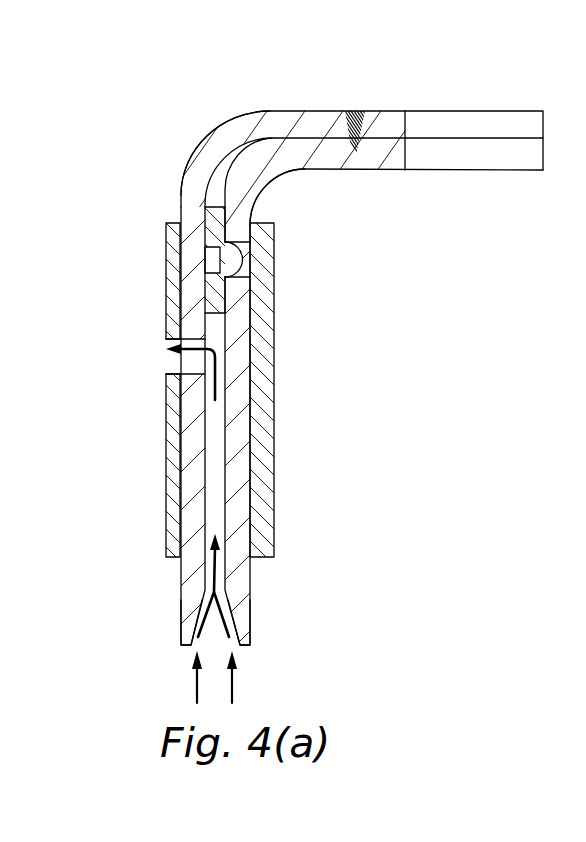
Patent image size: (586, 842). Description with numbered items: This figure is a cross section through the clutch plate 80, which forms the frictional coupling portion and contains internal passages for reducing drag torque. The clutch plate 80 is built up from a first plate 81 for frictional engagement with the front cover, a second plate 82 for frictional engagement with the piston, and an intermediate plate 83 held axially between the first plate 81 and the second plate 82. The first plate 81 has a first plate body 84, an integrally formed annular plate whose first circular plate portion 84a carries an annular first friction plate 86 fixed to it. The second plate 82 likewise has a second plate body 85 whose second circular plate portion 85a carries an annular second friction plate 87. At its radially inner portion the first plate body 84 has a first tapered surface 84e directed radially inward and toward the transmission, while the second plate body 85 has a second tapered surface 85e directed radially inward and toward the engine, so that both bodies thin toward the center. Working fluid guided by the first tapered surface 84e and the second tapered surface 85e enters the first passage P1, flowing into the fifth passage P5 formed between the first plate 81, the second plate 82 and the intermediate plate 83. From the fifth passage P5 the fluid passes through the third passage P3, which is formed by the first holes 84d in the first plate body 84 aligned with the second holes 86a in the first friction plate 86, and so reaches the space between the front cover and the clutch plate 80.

The clutch plate 80 is at (210, 88).
The first plate 81 is at (183, 160).
The second plate 82 is at (280, 190).
The intermediate plate 83 is at (198, 223).
The first plate body 84 is at (497, 111).
The first circular plate portion 84a is at (193, 467).
The first holes 84d is at (192, 373).
The first tapered surface 84e is at (190, 636).
The second plate body 85 is at (513, 173).
The second circular plate portion 85a is at (238, 443).
The second tapered surface 85e is at (240, 632).
The first friction plate 86 is at (164, 272).
The second holes 86a is at (172, 372).
The second friction plate 87 is at (266, 283).
The first passage P1 is at (243, 385).
The third passage P3 is at (168, 338).
The fifth passage P5 is at (212, 508).